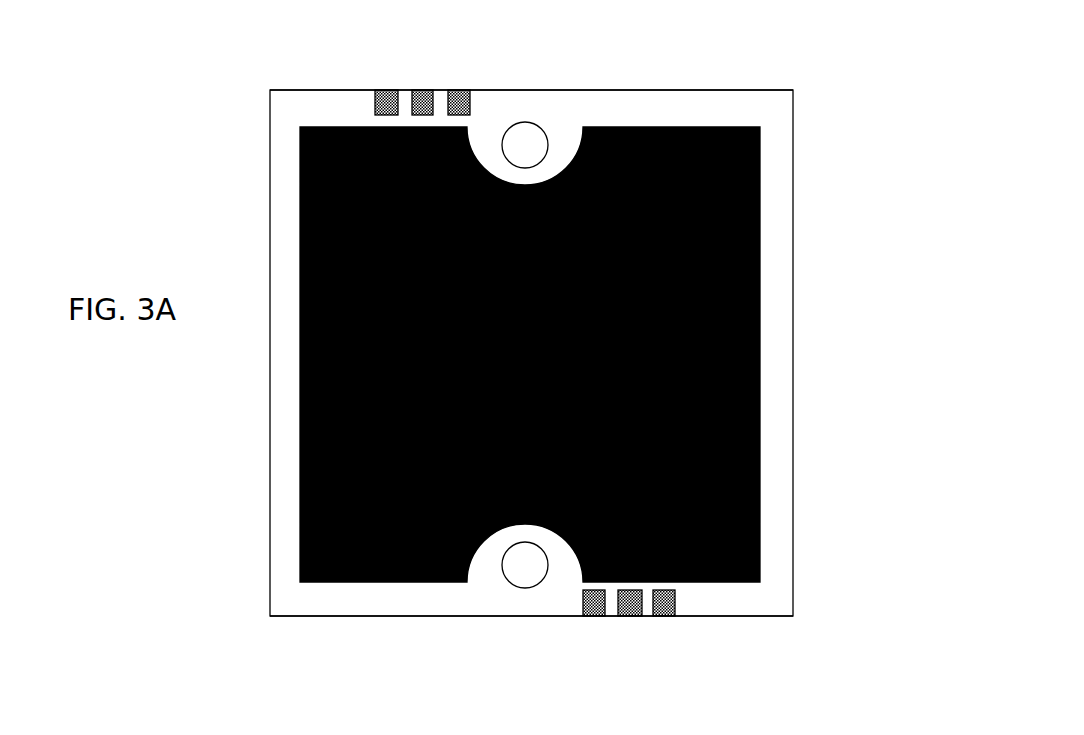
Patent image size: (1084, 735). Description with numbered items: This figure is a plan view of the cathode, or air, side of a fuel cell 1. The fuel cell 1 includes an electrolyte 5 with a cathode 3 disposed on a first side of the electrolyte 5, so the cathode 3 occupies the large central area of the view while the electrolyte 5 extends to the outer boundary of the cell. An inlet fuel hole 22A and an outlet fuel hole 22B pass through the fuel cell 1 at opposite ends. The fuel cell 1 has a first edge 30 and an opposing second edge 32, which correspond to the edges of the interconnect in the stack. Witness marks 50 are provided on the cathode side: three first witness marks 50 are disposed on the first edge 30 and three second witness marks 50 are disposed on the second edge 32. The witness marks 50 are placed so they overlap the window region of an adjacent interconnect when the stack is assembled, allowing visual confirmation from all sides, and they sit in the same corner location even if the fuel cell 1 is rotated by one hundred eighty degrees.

The fuel cell 1 is at (222, 232).
The cathode 3 is at (760, 355).
The electrolyte 5 is at (793, 353).
The inlet fuel hole 22A is at (523, 122).
The outlet fuel hole 22B is at (525, 588).
The first edge 30 is at (718, 616).
The second edge 32 is at (690, 90).
The witness mark 50 is at (423, 90).